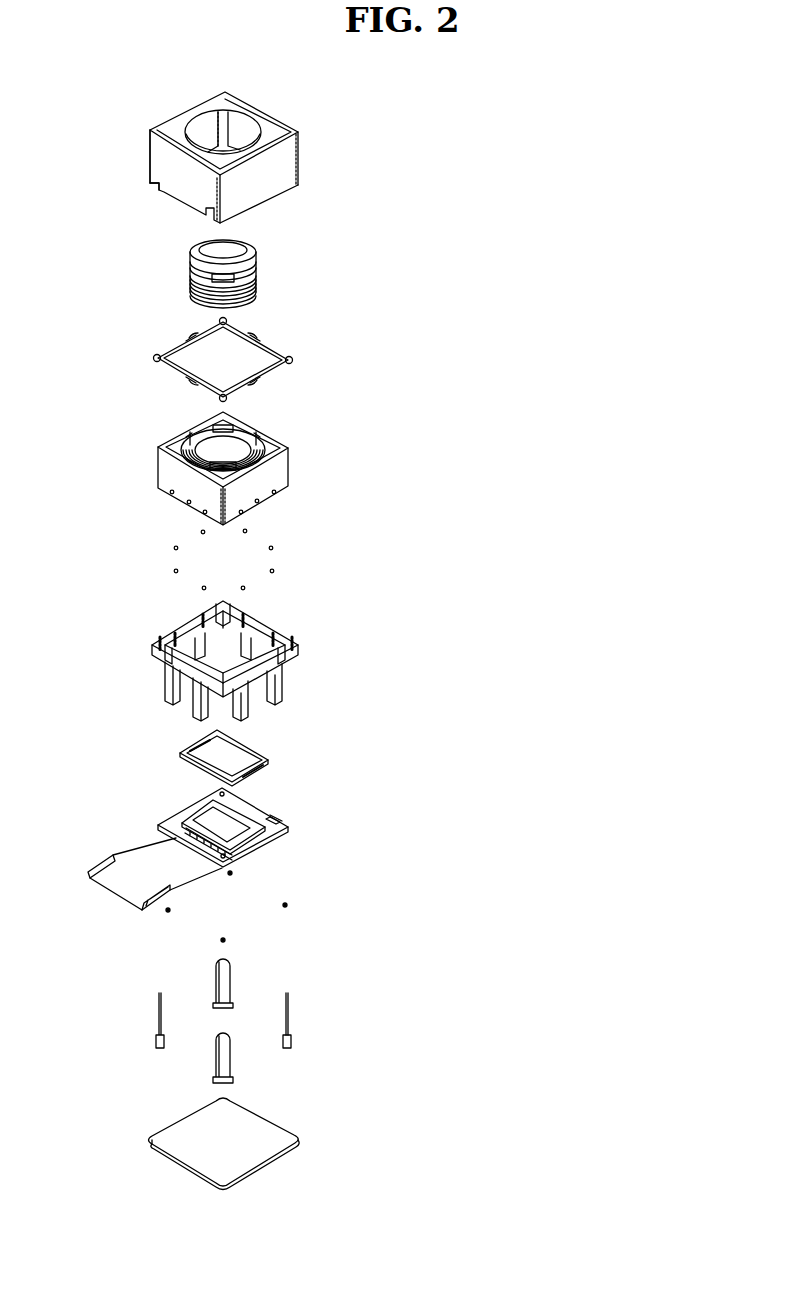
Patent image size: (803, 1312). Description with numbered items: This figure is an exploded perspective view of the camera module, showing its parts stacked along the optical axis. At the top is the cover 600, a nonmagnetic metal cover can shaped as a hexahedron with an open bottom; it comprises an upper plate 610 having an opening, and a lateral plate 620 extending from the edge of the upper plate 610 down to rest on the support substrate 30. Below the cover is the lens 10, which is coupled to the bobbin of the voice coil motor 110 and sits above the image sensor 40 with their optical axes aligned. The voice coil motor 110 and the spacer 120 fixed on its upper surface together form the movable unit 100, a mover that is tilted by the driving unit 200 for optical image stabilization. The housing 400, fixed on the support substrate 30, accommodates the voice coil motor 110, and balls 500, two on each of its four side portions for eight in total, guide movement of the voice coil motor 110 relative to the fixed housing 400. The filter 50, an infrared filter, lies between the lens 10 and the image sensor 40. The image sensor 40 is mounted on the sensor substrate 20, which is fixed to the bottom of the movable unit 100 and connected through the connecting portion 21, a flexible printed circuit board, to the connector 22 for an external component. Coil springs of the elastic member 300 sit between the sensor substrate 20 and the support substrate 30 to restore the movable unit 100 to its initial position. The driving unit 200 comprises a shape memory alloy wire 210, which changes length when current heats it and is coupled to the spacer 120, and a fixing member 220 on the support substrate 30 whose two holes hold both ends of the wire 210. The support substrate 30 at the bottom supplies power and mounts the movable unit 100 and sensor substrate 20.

The cover 600 is at (245, 143).
The upper plate 610 is at (185, 122).
The lateral plate 620 is at (158, 158).
The lens 10 is at (237, 254).
The movable unit 100 is at (162, 422).
The spacer 120 is at (160, 358).
The voice coil motor 110 is at (188, 468).
The ball 500 is at (273, 548).
The housing 400 is at (158, 657).
The filter 50 is at (180, 752).
The image sensor 40 is at (203, 818).
The sensor substrate 20 is at (208, 860).
The connecting portion 21 is at (153, 855).
The connector 22 is at (148, 905).
The elastic member 300 is at (288, 905).
The driving unit 200 is at (293, 1021).
The wire 210 is at (289, 1010).
The fixing member 220 is at (292, 1038).
The support substrate 30 is at (280, 1140).